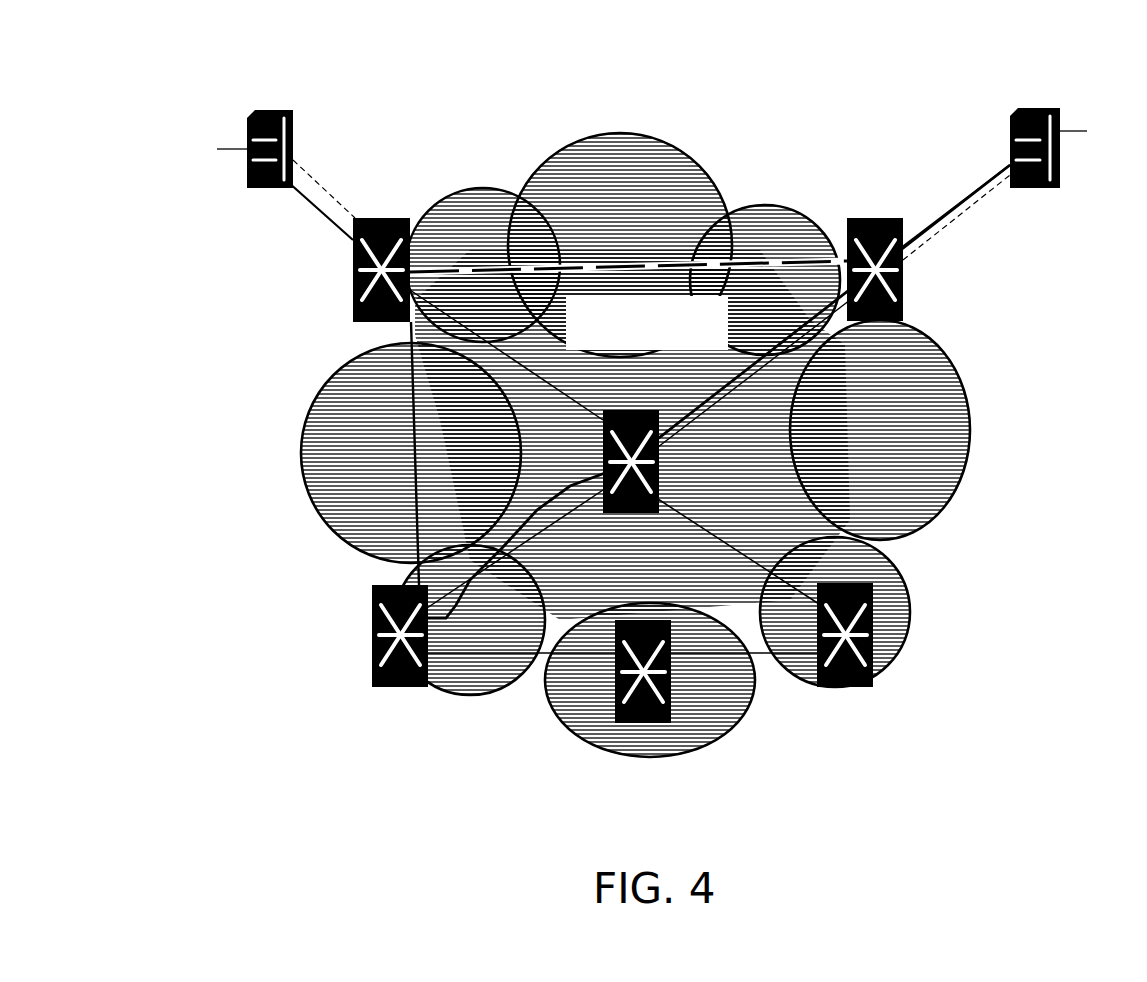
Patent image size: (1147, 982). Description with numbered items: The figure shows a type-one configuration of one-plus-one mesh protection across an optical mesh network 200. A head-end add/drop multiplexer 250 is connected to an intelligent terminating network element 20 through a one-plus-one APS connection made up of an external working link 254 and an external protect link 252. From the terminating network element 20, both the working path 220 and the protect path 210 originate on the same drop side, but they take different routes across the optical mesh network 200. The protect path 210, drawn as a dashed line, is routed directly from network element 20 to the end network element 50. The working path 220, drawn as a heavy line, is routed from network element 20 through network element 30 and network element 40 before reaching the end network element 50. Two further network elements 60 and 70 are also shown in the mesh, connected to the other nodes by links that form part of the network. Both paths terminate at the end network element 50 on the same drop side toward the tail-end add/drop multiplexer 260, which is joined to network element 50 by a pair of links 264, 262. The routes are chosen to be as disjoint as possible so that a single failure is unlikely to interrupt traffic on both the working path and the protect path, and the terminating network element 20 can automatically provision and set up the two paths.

The terminating network element 20 is at (352, 307).
The network element 30 is at (373, 647).
The network element 40 is at (605, 455).
The end network element 50 is at (873, 322).
The optical switch node 60 is at (648, 722).
The optical switch node 70 is at (847, 687).
The optical mesh network 200 is at (925, 622).
The protect path 210 is at (800, 255).
The working path 220 is at (797, 355).
The add/drop multiplexer 250 is at (248, 125).
The external protect link 252 is at (350, 217).
The external working link 254 is at (323, 212).
The add/drop multiplexer 260 is at (1057, 157).
The tail-end protection link 262 is at (935, 233).
The tail-end working link 264 is at (967, 197).